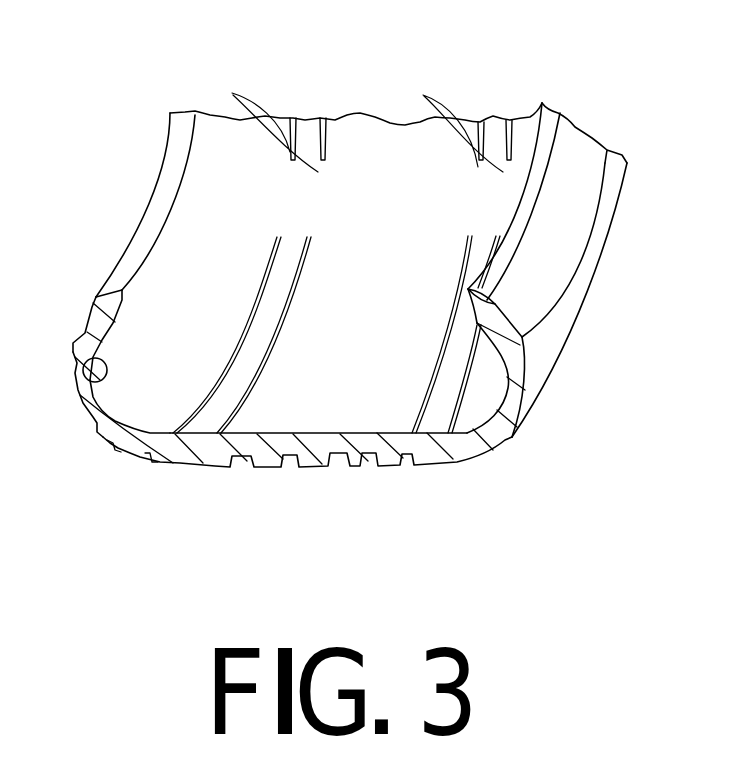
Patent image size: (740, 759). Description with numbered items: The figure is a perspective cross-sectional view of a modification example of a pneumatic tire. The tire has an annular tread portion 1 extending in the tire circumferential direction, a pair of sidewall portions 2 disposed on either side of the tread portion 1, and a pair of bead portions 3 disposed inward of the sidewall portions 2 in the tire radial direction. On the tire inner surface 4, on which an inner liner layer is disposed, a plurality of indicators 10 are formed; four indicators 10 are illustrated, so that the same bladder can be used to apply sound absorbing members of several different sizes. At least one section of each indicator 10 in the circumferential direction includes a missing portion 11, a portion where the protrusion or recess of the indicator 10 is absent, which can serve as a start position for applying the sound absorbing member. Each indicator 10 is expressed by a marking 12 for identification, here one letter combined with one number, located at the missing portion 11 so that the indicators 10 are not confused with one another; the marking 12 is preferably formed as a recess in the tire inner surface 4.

The tread portion 1 is at (315, 468).
The sidewall portions 2 is at (73, 398).
The bead portions 3 is at (90, 313).
The tire inner surface 4 is at (82, 370).
The indicator 10 is at (291, 117).
The missing portion 11 is at (358, 113).
The marking for identification 12 is at (320, 204).